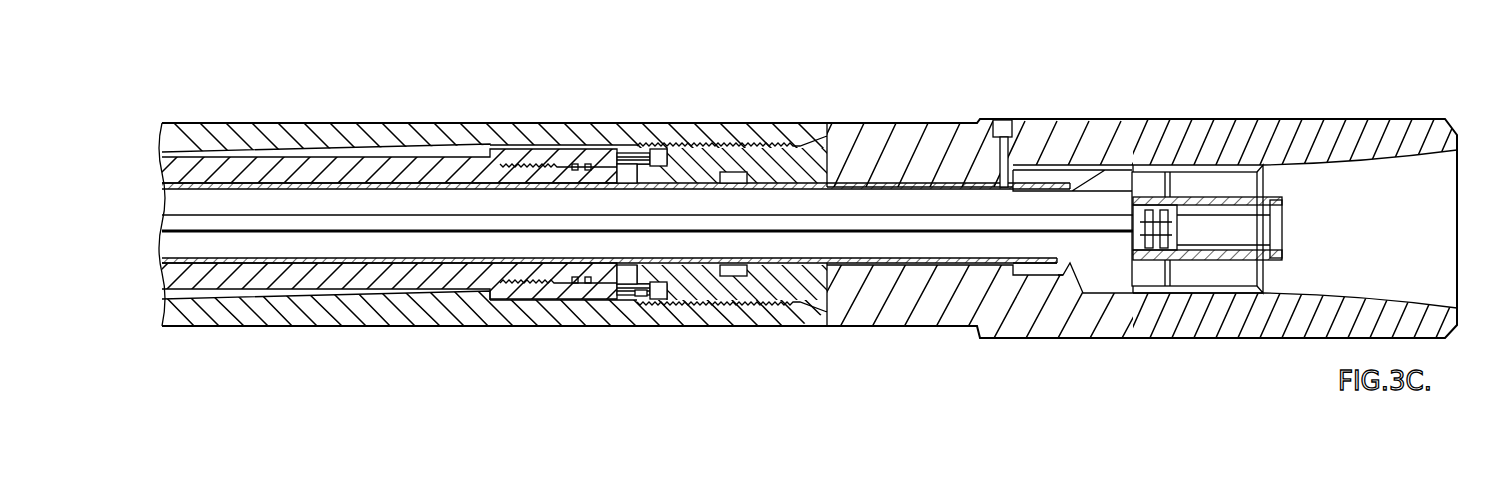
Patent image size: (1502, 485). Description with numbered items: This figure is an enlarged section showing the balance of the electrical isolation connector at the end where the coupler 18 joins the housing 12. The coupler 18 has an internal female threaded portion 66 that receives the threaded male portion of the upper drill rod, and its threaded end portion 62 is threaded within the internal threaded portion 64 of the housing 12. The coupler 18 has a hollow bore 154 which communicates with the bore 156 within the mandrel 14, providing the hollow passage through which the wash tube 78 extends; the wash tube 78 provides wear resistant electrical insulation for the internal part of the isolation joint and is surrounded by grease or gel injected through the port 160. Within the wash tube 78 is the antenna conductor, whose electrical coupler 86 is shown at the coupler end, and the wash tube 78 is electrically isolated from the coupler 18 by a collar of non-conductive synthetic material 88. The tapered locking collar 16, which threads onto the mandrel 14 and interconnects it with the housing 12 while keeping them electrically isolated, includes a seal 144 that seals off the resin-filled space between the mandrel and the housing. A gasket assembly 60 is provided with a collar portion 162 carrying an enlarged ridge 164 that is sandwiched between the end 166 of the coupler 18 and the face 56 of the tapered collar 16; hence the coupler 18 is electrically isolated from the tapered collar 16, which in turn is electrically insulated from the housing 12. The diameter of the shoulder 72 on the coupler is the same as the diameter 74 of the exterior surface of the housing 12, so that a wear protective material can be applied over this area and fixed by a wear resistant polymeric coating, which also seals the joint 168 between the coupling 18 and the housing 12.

The housing 12 is at (580, 122).
The mandrel 14 is at (245, 156).
The tapered locking collar 16 is at (526, 158).
The coupler 18 is at (1243, 113).
The face of the tapered collar 56 is at (650, 287).
The gasket assembly 60 is at (678, 270).
The threaded end portion 62 is at (756, 144).
The internal threaded portion 64 is at (713, 147).
The internal female threaded portion 66 is at (1360, 168).
The shoulder 72 is at (848, 160).
The exterior surface diameter of the housing 74 is at (398, 122).
The wash tube 78 is at (893, 186).
The electrical coupler 86 is at (1283, 203).
The collar of non-conductive synthetic material 88 is at (1072, 281).
The seal 144 is at (636, 153).
The hollow bore 154 is at (905, 262).
The bore 156 is at (303, 193).
The port 160 is at (1006, 121).
The collar portion 162 is at (633, 272).
The enlarged ridge 164 is at (660, 165).
The end of the coupler 166 is at (660, 292).
The joint 168 is at (826, 328).